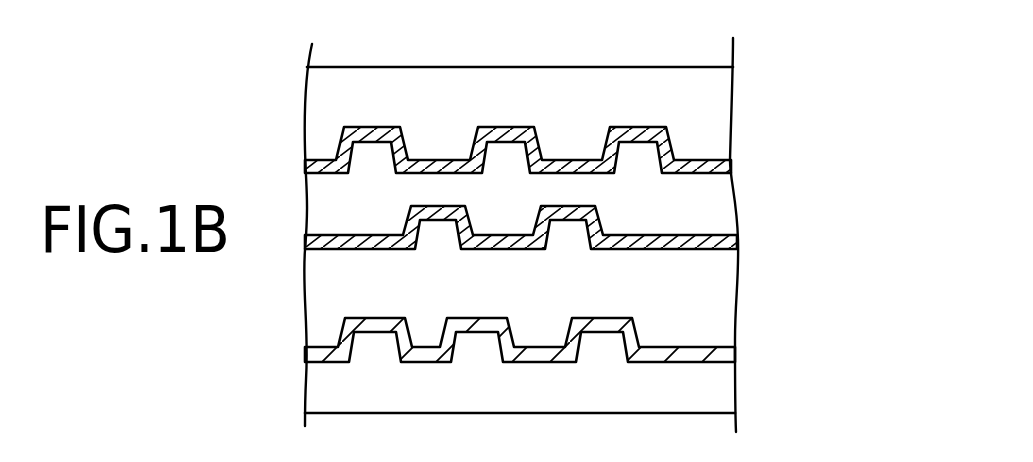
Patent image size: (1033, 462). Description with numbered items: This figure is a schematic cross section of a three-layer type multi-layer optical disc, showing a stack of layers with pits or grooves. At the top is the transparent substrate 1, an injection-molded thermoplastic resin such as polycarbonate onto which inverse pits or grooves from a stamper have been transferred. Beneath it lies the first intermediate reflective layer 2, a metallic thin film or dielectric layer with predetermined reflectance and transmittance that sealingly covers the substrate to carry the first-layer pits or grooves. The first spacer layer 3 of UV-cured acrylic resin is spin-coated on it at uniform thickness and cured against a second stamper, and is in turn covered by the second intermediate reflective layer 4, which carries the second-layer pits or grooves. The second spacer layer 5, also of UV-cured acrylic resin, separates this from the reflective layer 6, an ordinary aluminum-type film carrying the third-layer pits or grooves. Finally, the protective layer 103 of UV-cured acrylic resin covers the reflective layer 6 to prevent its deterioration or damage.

The transparent substrate 1 is at (720, 98).
The first intermediate reflective layer 2 is at (720, 163).
The first spacer layer 3 is at (725, 197).
The second intermediate reflective layer 4 is at (737, 241).
The second spacer layer 5 is at (722, 298).
The reflective layer 6 is at (718, 345).
The protective layer 103 is at (728, 387).